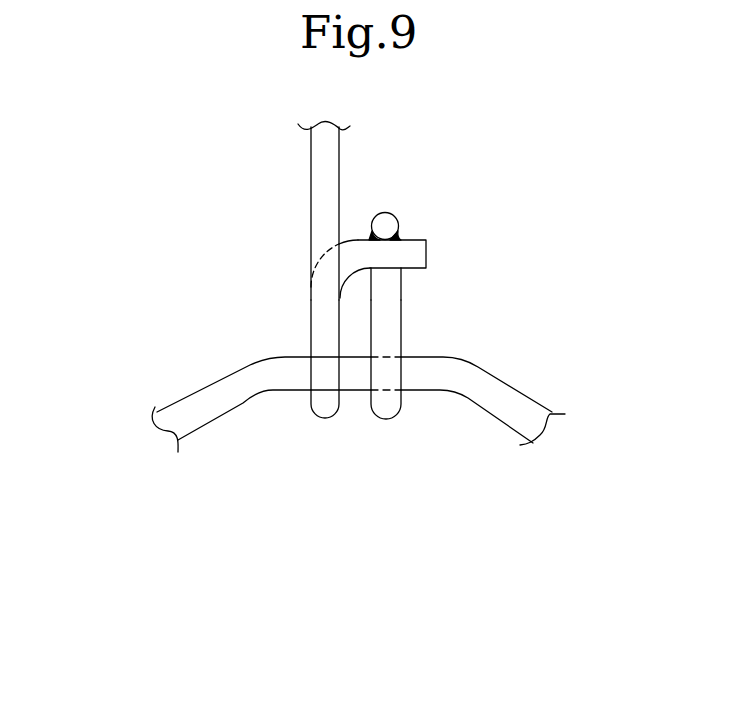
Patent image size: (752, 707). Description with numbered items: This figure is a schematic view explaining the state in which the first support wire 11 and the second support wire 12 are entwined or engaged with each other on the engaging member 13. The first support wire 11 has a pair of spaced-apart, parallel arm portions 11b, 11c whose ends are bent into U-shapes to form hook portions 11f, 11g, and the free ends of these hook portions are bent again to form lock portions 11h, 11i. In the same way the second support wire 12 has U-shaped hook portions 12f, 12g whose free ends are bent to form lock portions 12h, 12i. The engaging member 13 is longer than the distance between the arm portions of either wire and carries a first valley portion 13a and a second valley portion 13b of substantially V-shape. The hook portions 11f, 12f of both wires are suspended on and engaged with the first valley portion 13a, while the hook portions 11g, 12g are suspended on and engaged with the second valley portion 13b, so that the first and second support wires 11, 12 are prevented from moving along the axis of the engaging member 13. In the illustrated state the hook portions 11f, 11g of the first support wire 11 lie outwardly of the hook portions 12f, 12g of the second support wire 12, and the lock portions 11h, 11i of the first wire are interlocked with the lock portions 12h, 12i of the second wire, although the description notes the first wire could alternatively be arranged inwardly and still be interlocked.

The first support wire 11 is at (311, 288).
The arm portion 11b is at (310, 200).
The arm portion 11c is at (226, 210).
The hook portion 11f is at (325, 420).
The hook portion 11g is at (266, 454).
The lock portion 11h is at (427, 257).
The lock portion 11i is at (442, 263).
The second support wire 12 is at (401, 313).
The hook portion 12f is at (385, 420).
The hook portion 12g is at (412, 454).
The lock portion 12h is at (397, 216).
The lock portion 12i is at (482, 178).
The engaging member 13 is at (485, 416).
The first valley portion 13a is at (352, 410).
The second valley portion 13b is at (356, 373).